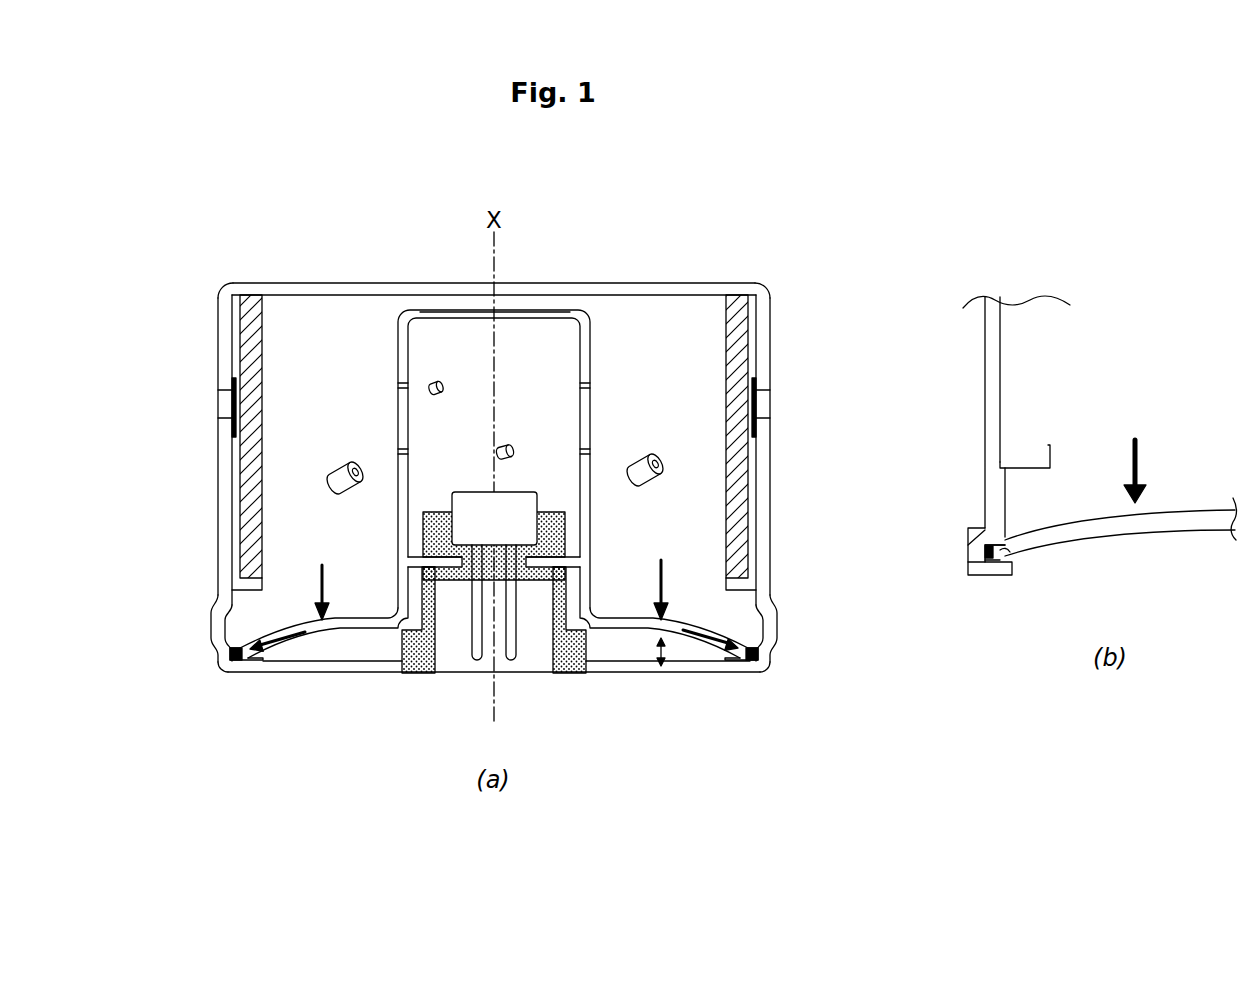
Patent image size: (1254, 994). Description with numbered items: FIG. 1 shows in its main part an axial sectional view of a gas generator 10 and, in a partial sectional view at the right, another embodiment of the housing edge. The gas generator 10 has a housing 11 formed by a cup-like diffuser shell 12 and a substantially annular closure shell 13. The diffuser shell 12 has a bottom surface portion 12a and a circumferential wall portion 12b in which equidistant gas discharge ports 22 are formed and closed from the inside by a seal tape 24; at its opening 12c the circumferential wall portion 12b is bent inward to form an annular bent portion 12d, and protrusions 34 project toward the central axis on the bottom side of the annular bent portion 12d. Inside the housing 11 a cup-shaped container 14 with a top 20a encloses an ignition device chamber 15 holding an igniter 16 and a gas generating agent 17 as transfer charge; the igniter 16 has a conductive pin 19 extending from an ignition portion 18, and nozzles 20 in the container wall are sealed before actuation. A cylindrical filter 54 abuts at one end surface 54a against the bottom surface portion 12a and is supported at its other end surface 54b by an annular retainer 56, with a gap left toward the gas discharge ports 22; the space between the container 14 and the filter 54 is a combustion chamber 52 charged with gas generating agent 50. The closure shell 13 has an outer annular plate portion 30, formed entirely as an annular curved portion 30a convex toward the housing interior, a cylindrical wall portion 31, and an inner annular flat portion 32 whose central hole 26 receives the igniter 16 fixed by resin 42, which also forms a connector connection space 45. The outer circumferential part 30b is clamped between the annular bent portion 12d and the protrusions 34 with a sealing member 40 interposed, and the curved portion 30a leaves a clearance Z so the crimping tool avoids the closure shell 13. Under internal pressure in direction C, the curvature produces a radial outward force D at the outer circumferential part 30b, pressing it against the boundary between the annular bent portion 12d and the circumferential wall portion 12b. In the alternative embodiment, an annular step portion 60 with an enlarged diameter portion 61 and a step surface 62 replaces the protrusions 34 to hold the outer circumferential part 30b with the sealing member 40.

The gas generator 10 is at (624, 266).
The housing 11 is at (838, 656).
The diffuser shell 12 is at (764, 605).
The bottom surface portion 12a is at (302, 292).
The circumferential wall portion 12b is at (772, 360).
The opening 12c is at (612, 673).
The annular bent portion 12d is at (247, 673).
The closure shell 13 is at (690, 640).
The cup-shaped container 14 is at (553, 310).
The ignition device chamber 15 is at (536, 377).
The igniter 16 is at (516, 490).
The gas generating agent 17 is at (446, 390).
The ignition portion 18 is at (494, 518).
The conductive pin 19 is at (478, 662).
The nozzles 20 is at (590, 386).
The sleeve top 20a is at (440, 318).
The gas discharge ports 22 is at (230, 405).
The seal tape 24 is at (232, 388).
The central hole 26 is at (517, 576).
The outer annular plate portion 30 is at (355, 632).
The annular curved portion 30a is at (345, 616).
The outer circumferential part 30b is at (235, 655).
The cylindrical wall portion 31 is at (404, 580).
The inner annular flat portion 32 is at (430, 532).
The protrusions 34 is at (222, 626).
The sealing member 40 is at (740, 645).
The resin 42 is at (437, 518).
The connector connection space 45 is at (449, 627).
The gas generating agent 50 is at (648, 457).
The combustion chamber 52 is at (290, 436).
The cylindrical filter 54 is at (750, 497).
The one end surface 54a is at (735, 300).
The other end surface 54b is at (748, 603).
The annular retainer 56 is at (244, 588).
The annular step portion 60 is at (962, 565).
The enlarged diameter portion 61 is at (968, 550).
The step surface 62 is at (975, 533).